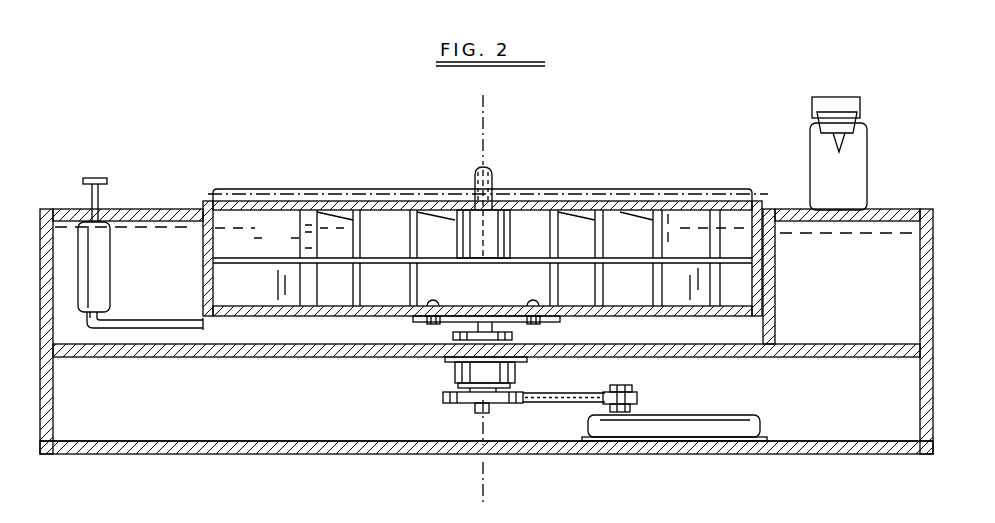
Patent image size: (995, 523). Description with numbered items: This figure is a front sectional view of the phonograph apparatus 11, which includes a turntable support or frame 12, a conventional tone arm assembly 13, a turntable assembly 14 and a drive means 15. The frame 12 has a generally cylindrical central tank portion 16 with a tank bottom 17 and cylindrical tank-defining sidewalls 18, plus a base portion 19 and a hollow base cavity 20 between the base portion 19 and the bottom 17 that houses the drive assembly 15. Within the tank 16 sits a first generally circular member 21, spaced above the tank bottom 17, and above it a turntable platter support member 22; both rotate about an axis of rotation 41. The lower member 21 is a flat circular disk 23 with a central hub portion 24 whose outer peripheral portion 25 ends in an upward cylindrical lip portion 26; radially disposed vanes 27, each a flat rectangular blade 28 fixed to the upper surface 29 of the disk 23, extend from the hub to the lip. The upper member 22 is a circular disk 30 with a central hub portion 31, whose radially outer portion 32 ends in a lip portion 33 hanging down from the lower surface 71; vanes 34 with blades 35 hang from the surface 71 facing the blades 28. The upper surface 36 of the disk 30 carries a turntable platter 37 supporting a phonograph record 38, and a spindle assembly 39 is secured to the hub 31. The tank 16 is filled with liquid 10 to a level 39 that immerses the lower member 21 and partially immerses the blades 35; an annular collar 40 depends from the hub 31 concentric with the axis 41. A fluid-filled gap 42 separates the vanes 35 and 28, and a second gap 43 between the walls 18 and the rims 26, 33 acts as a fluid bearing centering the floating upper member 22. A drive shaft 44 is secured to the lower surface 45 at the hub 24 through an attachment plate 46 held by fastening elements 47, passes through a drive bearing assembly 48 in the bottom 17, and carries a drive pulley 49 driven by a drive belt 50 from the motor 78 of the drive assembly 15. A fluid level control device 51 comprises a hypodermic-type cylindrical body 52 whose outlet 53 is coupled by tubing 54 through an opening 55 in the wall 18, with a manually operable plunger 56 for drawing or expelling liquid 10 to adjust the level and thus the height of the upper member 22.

The liquid 10 is at (250, 334).
The phonograph apparatus 11 is at (70, 169).
The turntable support or frame 12 is at (40, 231).
The tone arm assembly 13 is at (873, 123).
The turntable assembly 14 is at (693, 136).
The drive means 15 is at (678, 401).
The central tank portion 16 is at (300, 328).
The tank bottom 17 is at (380, 344).
The tank-defining sidewalls 18 is at (773, 245).
The base portion 19 is at (352, 454).
The hollow base cavity 20 is at (277, 419).
The first generally circular member 21 is at (746, 322).
The turntable platter support member 22 is at (734, 263).
The circular disk 23 is at (622, 317).
The central hub portion 24 is at (491, 304).
The outer peripheral portion 25 is at (335, 317).
The cylindrical lip portion 26 is at (203, 270).
The vanes 27 is at (734, 295).
The rectangular blade 28 is at (254, 291).
The upper surface 29 is at (394, 298).
The circular disk 30 is at (280, 199).
The central hub portion 31 is at (503, 203).
The radially outer portion 32 is at (733, 207).
The cylindrical lip portion 33 is at (243, 195).
The vanes 34 is at (706, 207).
The rectangular blade 35 is at (285, 234).
The upper surface 36 is at (584, 210).
The turntable platter 37 is at (338, 190).
The phonograph record 38 is at (377, 190).
The spindle assembly 39 is at (498, 171).
The annular collar 40 is at (506, 240).
The axis of rotation 41 is at (488, 112).
The fluid-filled gap 42 is at (627, 262).
The second gap 43 is at (763, 207).
The drive shaft 44 is at (490, 323).
The lower surface 45 is at (690, 317).
The attachment plate 46 is at (450, 316).
The fastening elements 47 is at (433, 302).
The drive bearing assembly 48 is at (449, 371).
The drive pulley 49 is at (506, 390).
The drive belt 50 is at (588, 395).
The fluid level control device 51 is at (117, 226).
The cylindrical body 52 is at (106, 270).
The outlet 53 is at (88, 318).
The tubing 54 is at (156, 322).
The opening 55 is at (201, 330).
The plunger 56 is at (97, 178).
The lower surface 71 is at (432, 210).
The motor 78 is at (752, 424).